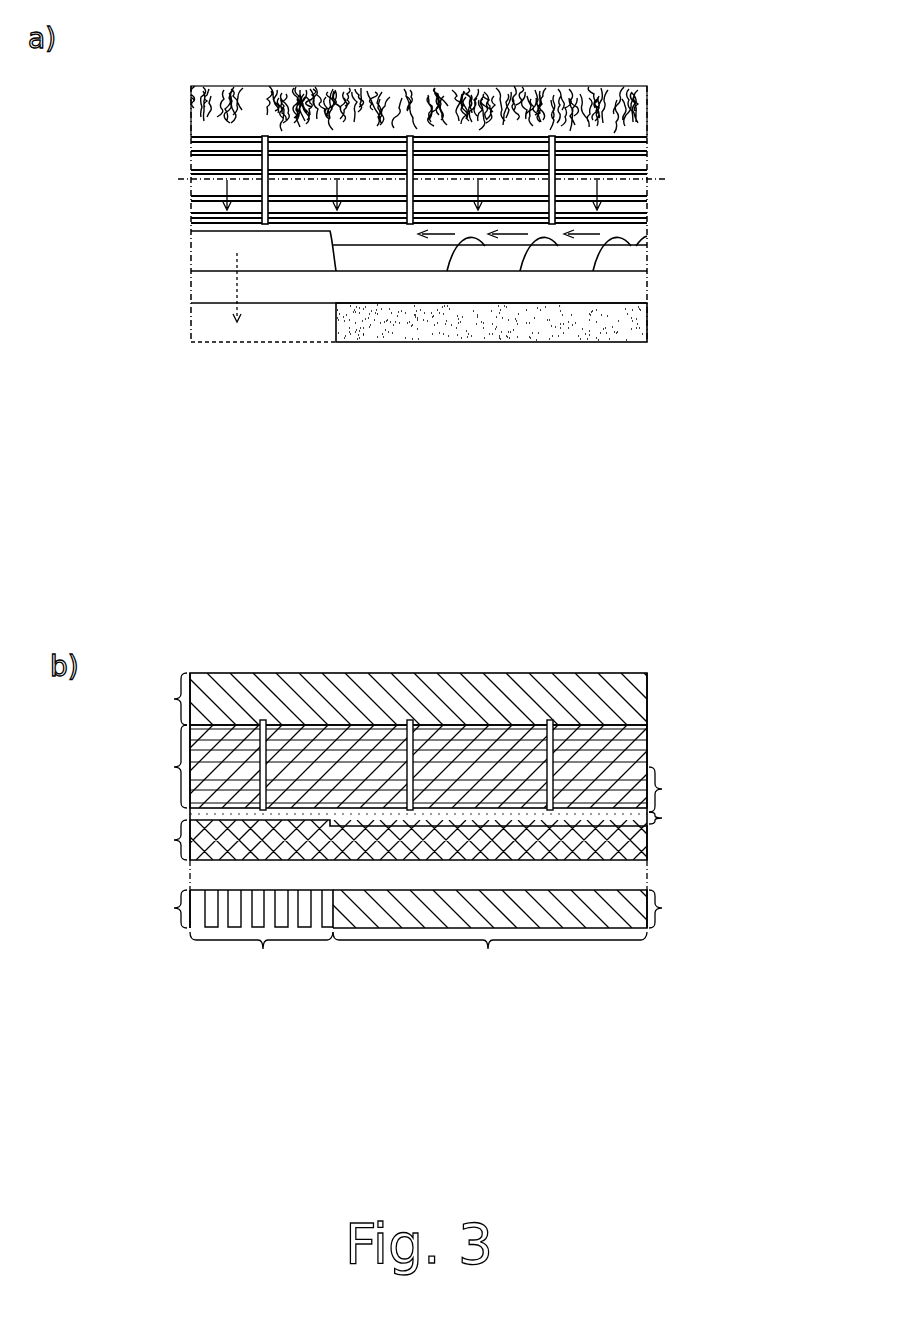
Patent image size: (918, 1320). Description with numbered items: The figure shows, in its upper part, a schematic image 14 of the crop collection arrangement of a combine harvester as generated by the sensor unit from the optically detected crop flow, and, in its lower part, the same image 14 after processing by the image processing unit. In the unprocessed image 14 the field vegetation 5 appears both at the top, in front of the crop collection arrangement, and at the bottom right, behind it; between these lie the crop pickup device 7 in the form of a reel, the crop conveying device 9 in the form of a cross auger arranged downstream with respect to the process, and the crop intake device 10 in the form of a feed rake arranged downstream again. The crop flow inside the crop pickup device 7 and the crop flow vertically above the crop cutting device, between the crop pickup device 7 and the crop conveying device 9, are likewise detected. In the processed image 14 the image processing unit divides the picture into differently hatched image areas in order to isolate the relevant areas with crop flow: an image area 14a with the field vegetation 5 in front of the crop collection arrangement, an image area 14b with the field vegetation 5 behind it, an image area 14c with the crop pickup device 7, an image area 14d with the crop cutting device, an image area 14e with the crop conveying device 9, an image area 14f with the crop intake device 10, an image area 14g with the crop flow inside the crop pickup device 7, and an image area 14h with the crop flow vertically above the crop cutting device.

The field vegetation 5 is at (497, 87).
The crop pickup device 7 is at (647, 213).
The crop conveying device 9 is at (648, 244).
The crop intake device 10 is at (206, 232).
The image 14 is at (666, 135).
The image area with field vegetation in front of the crop collection arrangement 14a is at (406, 699).
The image area with field vegetation behind the crop collection arrangement 14b is at (488, 949).
The image area with the crop pickup device 14c is at (413, 765).
The image area with the crop cutting device 14d is at (170, 813).
The image area with the crop conveying device 14e is at (395, 840).
The image area with the crop intake device 14f is at (263, 949).
The image area with the crop flow inside the crop pickup device 14g is at (663, 789).
The image area with the crop flow above the crop cutting device 14h is at (663, 818).